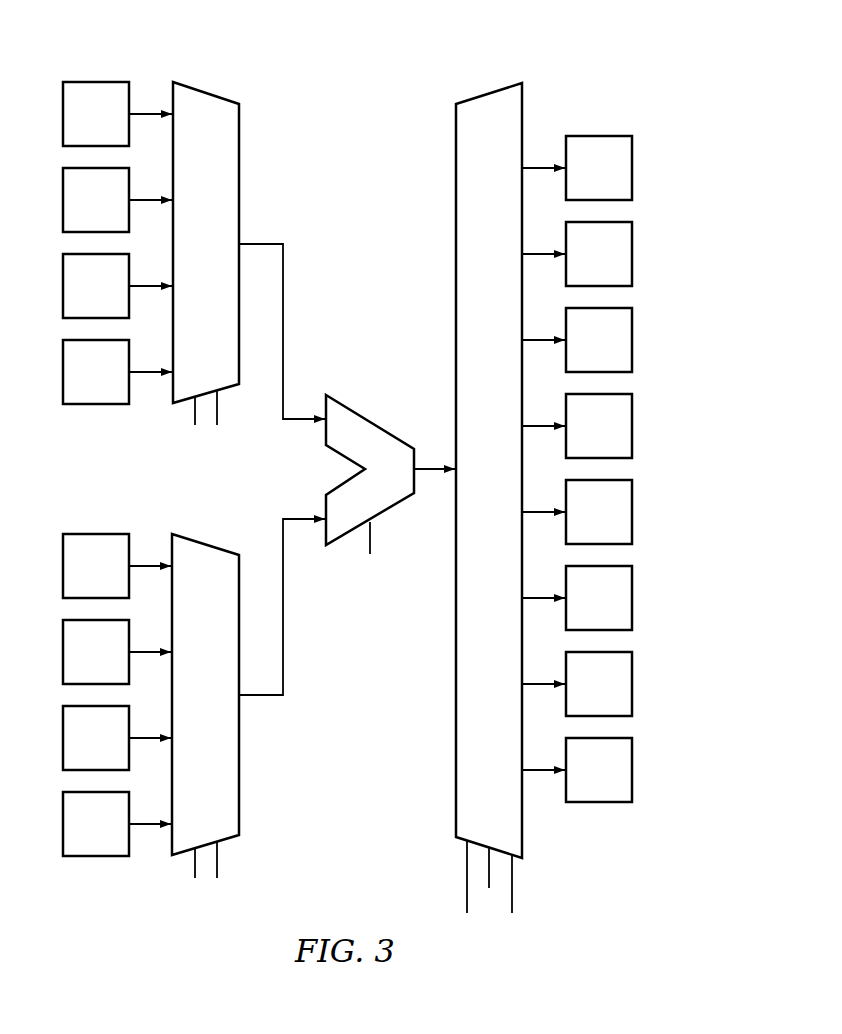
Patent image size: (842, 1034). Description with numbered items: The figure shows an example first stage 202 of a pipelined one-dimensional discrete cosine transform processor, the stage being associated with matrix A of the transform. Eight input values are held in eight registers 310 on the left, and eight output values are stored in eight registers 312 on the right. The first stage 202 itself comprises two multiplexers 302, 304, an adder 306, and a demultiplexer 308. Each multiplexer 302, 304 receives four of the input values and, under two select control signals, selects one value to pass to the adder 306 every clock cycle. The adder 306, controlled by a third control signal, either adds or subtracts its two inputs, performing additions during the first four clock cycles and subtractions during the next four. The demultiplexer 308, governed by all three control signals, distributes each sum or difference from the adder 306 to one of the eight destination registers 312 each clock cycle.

The first stage 202 is at (684, 231).
The registers 310 is at (95, 69).
The registers 312 is at (599, 125).
The multiplexer 302 is at (186, 257).
The multiplexer 304 is at (186, 707).
The adder 306 is at (369, 418).
The demultiplexer 308 is at (470, 483).